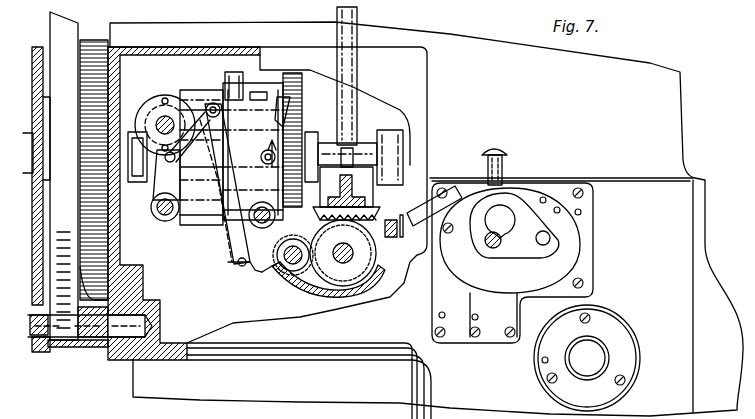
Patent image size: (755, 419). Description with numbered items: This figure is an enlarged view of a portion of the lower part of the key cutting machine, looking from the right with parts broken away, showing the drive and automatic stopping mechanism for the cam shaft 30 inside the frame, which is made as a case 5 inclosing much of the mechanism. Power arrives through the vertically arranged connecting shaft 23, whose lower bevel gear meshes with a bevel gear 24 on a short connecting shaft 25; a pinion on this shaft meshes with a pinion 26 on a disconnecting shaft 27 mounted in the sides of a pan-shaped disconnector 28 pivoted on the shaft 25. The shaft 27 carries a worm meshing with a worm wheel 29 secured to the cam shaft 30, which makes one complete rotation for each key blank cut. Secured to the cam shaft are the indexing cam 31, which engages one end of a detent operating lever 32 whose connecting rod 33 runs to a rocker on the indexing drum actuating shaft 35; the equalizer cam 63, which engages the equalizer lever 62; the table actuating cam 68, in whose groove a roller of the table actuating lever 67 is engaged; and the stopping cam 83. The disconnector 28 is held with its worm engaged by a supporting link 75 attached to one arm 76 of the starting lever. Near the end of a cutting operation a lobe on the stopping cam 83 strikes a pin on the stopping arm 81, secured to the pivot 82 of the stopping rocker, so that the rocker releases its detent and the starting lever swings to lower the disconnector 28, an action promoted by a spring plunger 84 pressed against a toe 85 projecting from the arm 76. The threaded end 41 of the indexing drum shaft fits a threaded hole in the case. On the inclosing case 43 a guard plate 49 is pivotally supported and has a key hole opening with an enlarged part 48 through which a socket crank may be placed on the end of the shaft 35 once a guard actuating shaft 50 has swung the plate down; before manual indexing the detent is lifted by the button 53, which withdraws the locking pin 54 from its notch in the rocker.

The case 5 is at (672, 152).
The connecting shaft 23 is at (352, 100).
The bevel gear 24 is at (363, 285).
The connecting shaft 25 is at (343, 257).
The pinion 26 is at (295, 273).
The disconnecting shaft 27 is at (277, 272).
The disconnector 28 is at (343, 300).
The worm wheel 29 is at (307, 98).
The cam shaft 30 is at (363, 143).
The cam 31 is at (268, 93).
The detent operating lever 32 is at (261, 220).
The connecting rod 33 is at (447, 200).
The indexing drum actuating shaft 35 is at (488, 245).
The threaded end 41 is at (592, 358).
The inclosing case 43 is at (557, 270).
The enlarged part of key hole opening 48 is at (503, 220).
The guard plate 49 is at (520, 250).
The guard actuating shaft 50 is at (550, 237).
The button 53 is at (503, 150).
The locking pin 54 is at (505, 163).
The equalizer lever 62 is at (228, 72).
The equalizer cam 63 is at (218, 220).
The table actuating lever 67 is at (68, 32).
The table actuating cam 68 is at (78, 272).
The supporting link 75 is at (233, 248).
The arm of starting lever 76 is at (200, 97).
The stopping arm 81 is at (155, 196).
The pivot 82 is at (162, 216).
The stopping cam 83 is at (187, 222).
The spring plunger 84 is at (133, 132).
The toe 85 is at (155, 100).